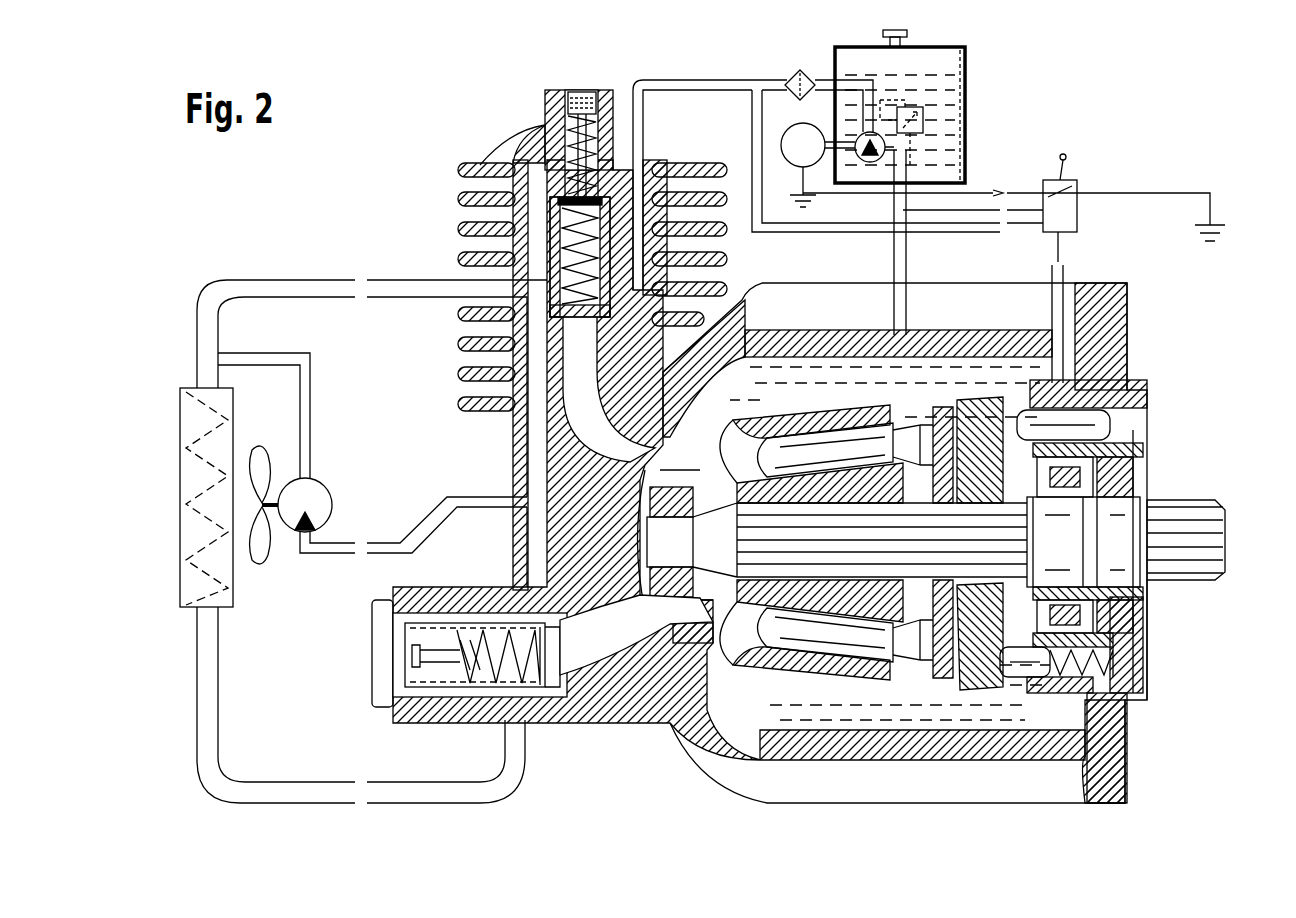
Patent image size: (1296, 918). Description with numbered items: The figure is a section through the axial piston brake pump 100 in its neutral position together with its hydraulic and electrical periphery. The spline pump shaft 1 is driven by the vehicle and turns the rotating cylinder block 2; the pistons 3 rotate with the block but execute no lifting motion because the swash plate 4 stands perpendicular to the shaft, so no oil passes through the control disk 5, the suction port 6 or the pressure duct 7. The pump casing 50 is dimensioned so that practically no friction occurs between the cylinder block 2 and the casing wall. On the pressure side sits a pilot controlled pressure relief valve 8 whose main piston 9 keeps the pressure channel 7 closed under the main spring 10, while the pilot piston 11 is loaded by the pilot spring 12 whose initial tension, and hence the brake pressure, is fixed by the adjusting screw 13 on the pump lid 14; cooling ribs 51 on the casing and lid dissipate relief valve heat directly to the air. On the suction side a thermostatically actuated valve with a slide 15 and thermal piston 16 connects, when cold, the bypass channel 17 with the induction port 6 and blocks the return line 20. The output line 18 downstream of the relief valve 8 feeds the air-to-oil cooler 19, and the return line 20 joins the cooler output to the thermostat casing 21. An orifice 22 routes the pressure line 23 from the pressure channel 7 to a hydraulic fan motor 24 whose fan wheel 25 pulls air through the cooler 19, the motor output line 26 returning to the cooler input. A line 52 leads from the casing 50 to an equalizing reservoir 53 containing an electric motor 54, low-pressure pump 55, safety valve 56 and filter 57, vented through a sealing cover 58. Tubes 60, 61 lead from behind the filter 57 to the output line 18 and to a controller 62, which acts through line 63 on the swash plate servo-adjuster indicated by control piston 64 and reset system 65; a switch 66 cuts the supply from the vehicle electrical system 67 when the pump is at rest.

The pump shaft 1 is at (1185, 578).
The rotating cylinder block 2 is at (762, 660).
The pistons 3 is at (833, 670).
The swash plate 4 is at (975, 680).
The control disk 5 is at (697, 673).
The suction port 6 is at (606, 690).
The pressure duct 7 is at (563, 375).
The pilot controlled pressure relief valve 8 is at (512, 355).
The main piston 9 is at (552, 240).
The main spring 10 is at (513, 165).
The pilot piston 11 is at (550, 140).
The pilot spring 12 is at (548, 115).
The adjusting screw 13 is at (582, 92).
The pump lid or cover 14 is at (618, 690).
The slide or sleeve 15 is at (538, 715).
The thermal piston 16 is at (433, 720).
The bypass or short circuit channel 17 is at (535, 477).
The output line 18 is at (403, 283).
The air-to-oil cooler 19 is at (183, 443).
The return line 20 is at (437, 790).
The thermostat casing 21 is at (432, 600).
The orifice or restrictor aperture 22 is at (513, 452).
The pressure line 23 is at (427, 540).
The hydraulic fan motor 24 is at (320, 490).
The fan wheel 25 is at (262, 560).
The output line 26 is at (310, 398).
The pump casing 50 is at (1115, 343).
The cooling ribs 51 is at (770, 300).
The line 52 is at (908, 280).
The equalizing reservoir 53 is at (964, 140).
The electric motor 54 is at (781, 143).
The low-pressure pump 55 is at (858, 137).
The safety valve 56 is at (925, 112).
The filter 57 is at (790, 77).
The sealing cover 58 is at (910, 40).
The tube 60 is at (690, 80).
The tube 61 is at (845, 235).
The controller 62 is at (1080, 210).
The line 63 is at (1065, 275).
The control piston 64 is at (1100, 425).
The reset system 65 is at (1045, 690).
The switch 66 is at (1066, 172).
The vehicle electrical system 67 is at (1226, 224).
The pump 100 is at (1128, 752).